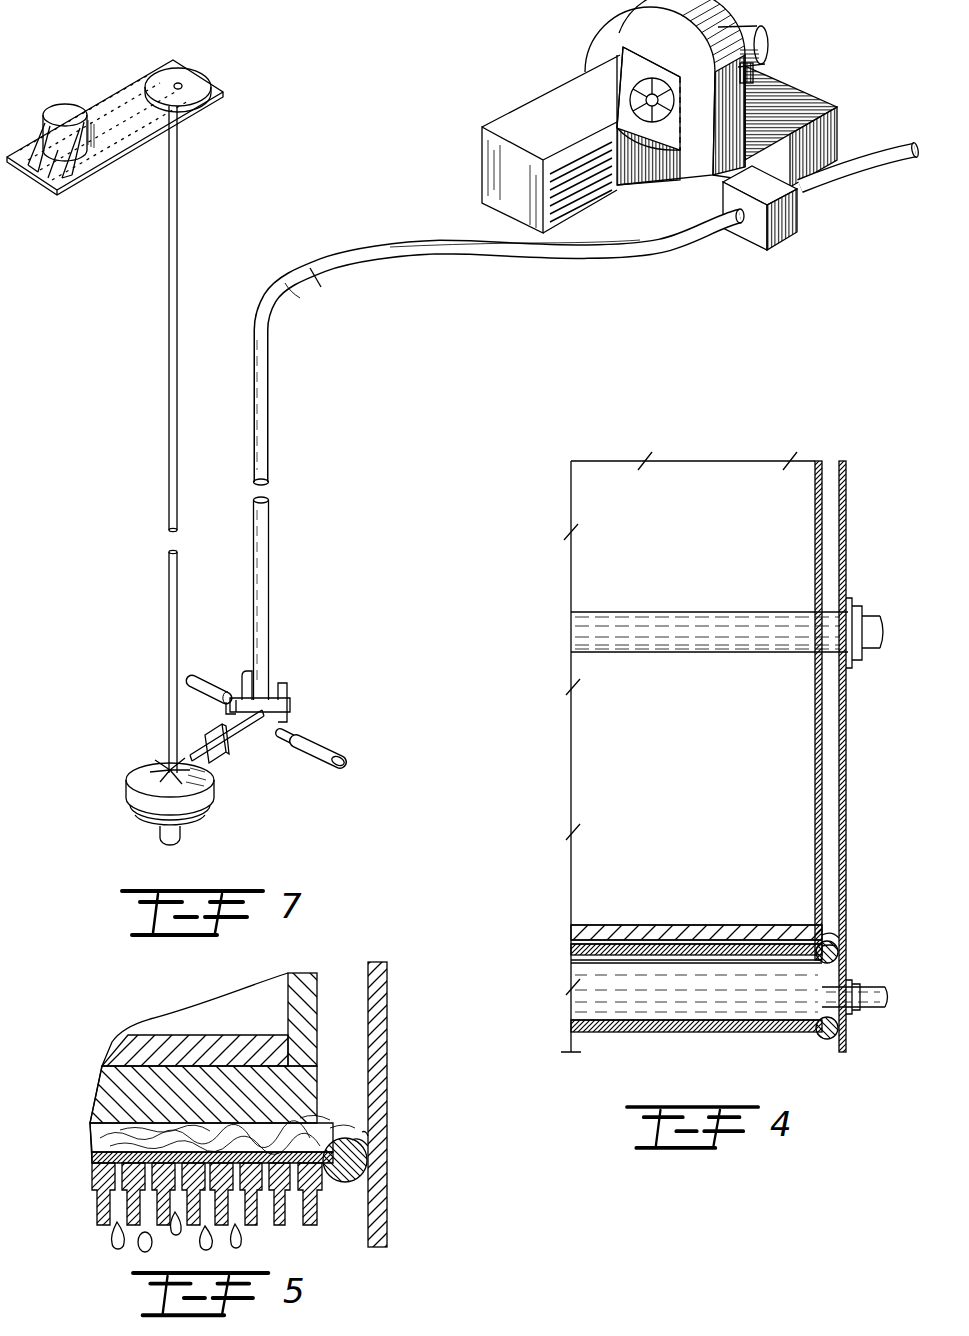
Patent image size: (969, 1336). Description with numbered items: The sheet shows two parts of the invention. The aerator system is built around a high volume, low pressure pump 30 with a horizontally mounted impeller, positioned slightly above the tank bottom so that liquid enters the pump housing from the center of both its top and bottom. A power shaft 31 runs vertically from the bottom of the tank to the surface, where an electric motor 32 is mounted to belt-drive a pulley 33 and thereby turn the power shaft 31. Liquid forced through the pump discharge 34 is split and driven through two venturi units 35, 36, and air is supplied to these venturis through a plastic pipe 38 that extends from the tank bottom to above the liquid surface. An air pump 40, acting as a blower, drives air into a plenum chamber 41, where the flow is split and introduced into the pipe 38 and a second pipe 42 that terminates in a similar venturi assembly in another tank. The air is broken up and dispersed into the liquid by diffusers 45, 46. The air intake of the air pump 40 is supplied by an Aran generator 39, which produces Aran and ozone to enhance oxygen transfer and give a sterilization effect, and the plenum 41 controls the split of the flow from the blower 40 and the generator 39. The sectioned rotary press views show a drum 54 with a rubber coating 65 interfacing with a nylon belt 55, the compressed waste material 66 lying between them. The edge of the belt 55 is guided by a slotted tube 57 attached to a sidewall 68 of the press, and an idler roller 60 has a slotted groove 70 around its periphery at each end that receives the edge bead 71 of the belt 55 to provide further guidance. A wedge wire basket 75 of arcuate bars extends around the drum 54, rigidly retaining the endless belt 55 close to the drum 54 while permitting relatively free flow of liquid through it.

In FIG. 7, the pump 30 is at (212, 803).
In FIG. 7, the power shaft 31 is at (168, 462).
In FIG. 7, the electric motor 32 is at (66, 108).
In FIG. 7, the pulley 33 is at (198, 77).
In FIG. 7, the pump discharge 34 is at (213, 758).
In FIG. 7, the venturi unit 35 is at (232, 708).
In FIG. 7, the venturi unit 36 is at (290, 733).
In FIG. 7, the plastic pipe 38 is at (270, 592).
In FIG. 7, the Aran generator 39 is at (526, 118).
In FIG. 7, the air pump 40 is at (608, 36).
In FIG. 7, the plenum chamber 41 is at (788, 240).
In FIG. 7, the pipe 42 is at (860, 163).
In FIG. 7, the diffuser 45 is at (198, 676).
In FIG. 7, the diffuser 46 is at (334, 752).
In FIG. 4, the drum 54 is at (672, 925).
In FIG. 5, the drum 54 is at (112, 1053).
In FIG. 4, the nylon belt 55 is at (571, 950).
In FIG. 5, the nylon belt 55 is at (92, 1158).
In FIG. 4, the slotted tube 57 is at (834, 940).
In FIG. 5, the slotted tube 57 is at (360, 1143).
In FIG. 4, the idler roller 60 is at (730, 1015).
In FIG. 4, the rubber coating 65 is at (571, 930).
In FIG. 5, the rubber coating 65 is at (100, 1090).
In FIG. 4, the compressed waste material 66 is at (571, 942).
In FIG. 5, the compressed waste material 66 is at (92, 1138).
In FIG. 4, the sidewall 68 is at (846, 852).
In FIG. 5, the sidewall 68 is at (388, 1038).
In FIG. 4, the slotted groove 70 is at (836, 1005).
In FIG. 4, the edge bead 71 is at (840, 952).
In FIG. 5, the edge bead 71 is at (367, 1158).
In FIG. 5, the wedge wire basket 75 is at (278, 1226).